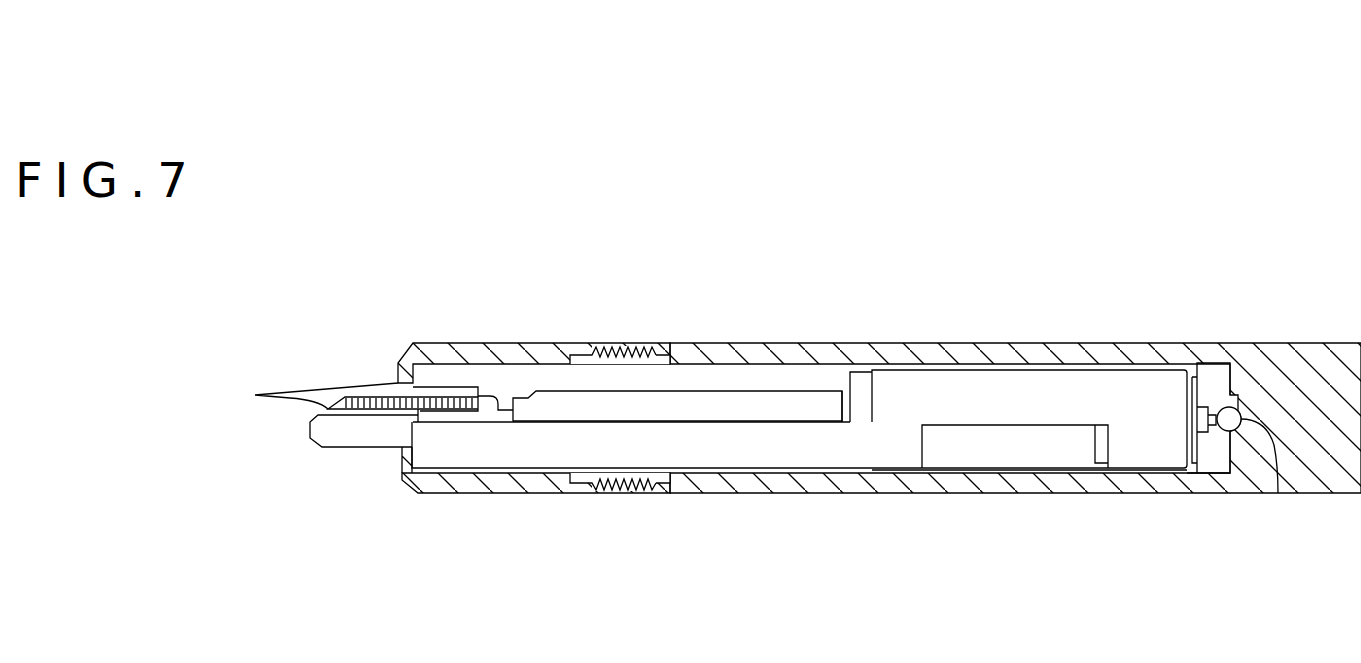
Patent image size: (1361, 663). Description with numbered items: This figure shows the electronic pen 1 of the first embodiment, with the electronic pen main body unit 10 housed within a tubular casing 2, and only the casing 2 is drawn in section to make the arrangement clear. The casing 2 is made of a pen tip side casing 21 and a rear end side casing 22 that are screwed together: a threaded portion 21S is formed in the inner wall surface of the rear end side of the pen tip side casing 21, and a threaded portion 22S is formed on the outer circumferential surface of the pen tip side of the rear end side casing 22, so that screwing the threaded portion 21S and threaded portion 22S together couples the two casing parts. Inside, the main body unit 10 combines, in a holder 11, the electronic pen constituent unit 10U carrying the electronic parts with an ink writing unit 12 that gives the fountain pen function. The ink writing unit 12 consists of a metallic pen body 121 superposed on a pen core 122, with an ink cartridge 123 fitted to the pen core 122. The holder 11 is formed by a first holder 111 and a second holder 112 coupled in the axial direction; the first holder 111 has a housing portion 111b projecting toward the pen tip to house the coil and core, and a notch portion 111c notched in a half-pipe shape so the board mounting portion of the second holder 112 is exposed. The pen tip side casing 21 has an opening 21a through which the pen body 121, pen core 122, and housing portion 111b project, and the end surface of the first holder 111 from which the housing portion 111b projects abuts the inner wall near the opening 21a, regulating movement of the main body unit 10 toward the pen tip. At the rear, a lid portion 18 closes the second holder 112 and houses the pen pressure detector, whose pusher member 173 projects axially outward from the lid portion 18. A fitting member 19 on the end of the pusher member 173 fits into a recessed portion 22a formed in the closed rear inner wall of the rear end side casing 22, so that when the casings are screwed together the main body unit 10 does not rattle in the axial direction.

The electronic pen 1 is at (773, 338).
The tubular casing 2 is at (1056, 338).
The electronic pen main body unit 10 is at (866, 458).
The electronic pen constituent unit 10U is at (901, 457).
The holder 11 is at (800, 458).
The ink writing unit 12 is at (635, 276).
The lid portion 18 is at (1192, 377).
The fitting member 19 is at (1236, 409).
The pen tip side casing 21 is at (478, 480).
The opening 21a is at (392, 383).
The threaded portion 21S is at (614, 493).
The rear end side casing 22 is at (748, 490).
The threaded portion 22S is at (658, 493).
The recessed portion 22a is at (1278, 493).
The first holder 111 is at (540, 455).
The housing portion 111b is at (356, 430).
The notch portion 111c is at (1013, 455).
The second holder 112 is at (857, 390).
The pen body 121 is at (457, 388).
The pen core 122 is at (492, 396).
The ink cartridge 123 is at (662, 398).
The pusher member 173 is at (1212, 430).